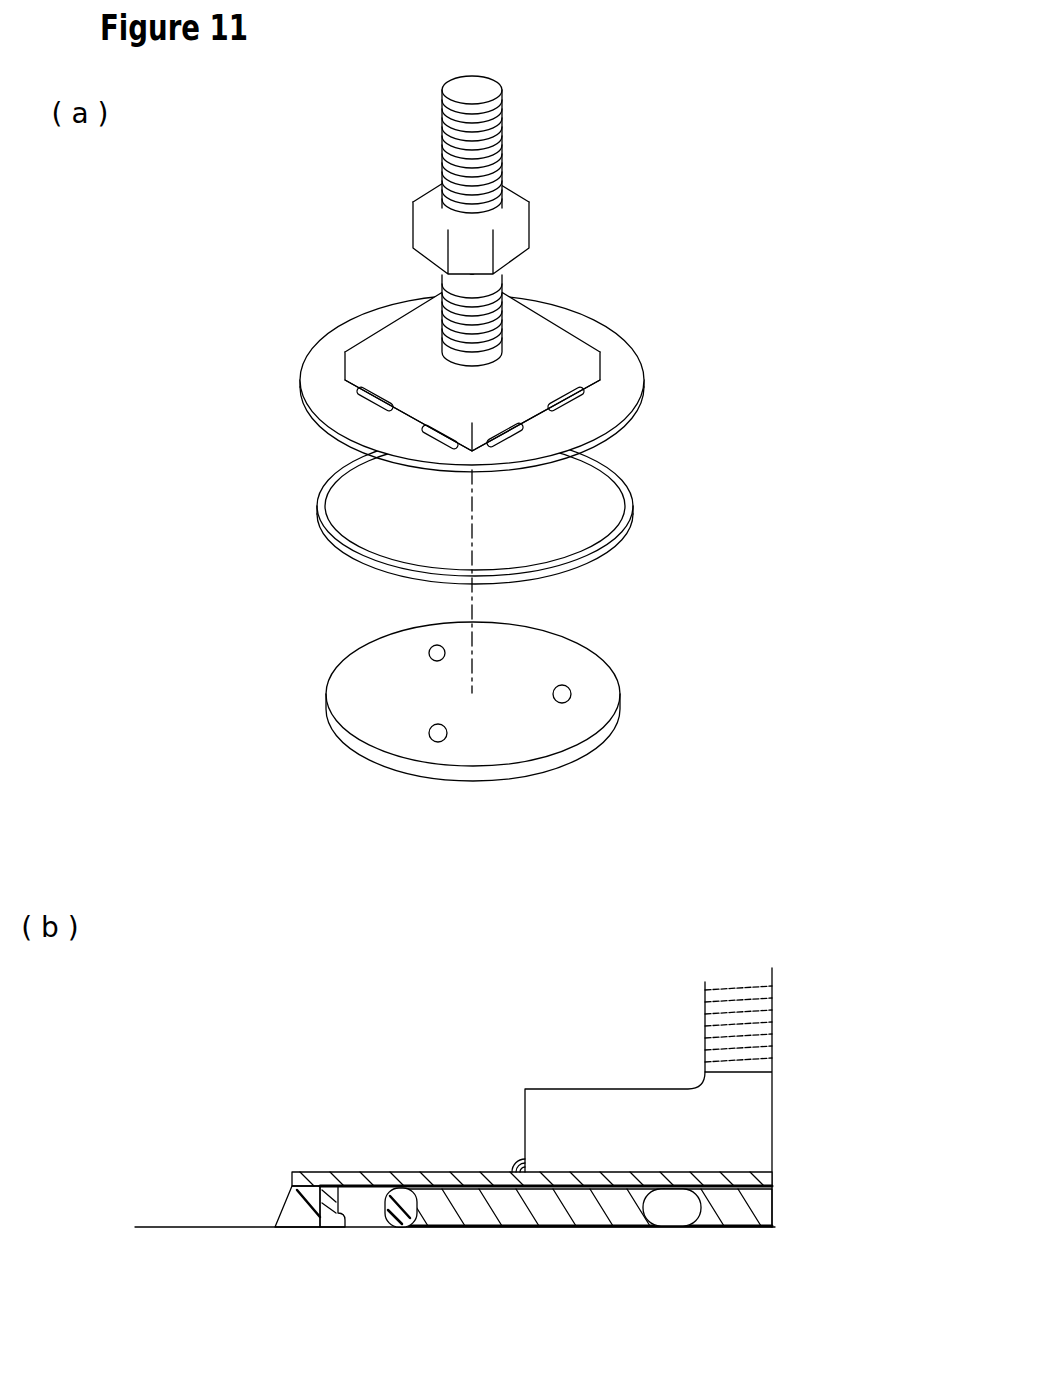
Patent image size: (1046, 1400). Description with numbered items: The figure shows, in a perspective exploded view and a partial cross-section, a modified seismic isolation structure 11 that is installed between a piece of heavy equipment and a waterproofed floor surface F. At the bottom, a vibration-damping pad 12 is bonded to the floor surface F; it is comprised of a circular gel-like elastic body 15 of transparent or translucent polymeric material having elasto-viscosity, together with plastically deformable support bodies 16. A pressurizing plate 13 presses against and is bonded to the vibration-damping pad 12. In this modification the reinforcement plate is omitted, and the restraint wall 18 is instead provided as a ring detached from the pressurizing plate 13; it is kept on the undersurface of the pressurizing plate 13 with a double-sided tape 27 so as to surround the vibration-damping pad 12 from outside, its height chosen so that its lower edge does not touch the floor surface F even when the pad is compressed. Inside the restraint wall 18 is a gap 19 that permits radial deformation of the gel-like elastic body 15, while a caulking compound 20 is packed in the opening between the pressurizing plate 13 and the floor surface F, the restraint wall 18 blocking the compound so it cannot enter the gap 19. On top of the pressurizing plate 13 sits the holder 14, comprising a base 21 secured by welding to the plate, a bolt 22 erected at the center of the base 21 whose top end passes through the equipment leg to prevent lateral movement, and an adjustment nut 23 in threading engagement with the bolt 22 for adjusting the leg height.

The seismic isolation structure 11 is at (297, 252).
The vibration-damping pad 12 is at (460, 947).
The pressurizing plate 13 is at (620, 368).
The holder 14 is at (513, 173).
The gel-like elastic body 15 is at (572, 660).
The support body 16 is at (440, 742).
The restraint wall 18 is at (320, 500).
The gap 19 is at (368, 1222).
The caulking compound 20 is at (293, 1198).
The base 21 is at (397, 335).
The bolt 22 is at (450, 136).
The adjustment nut 23 is at (527, 221).
The double-sided tape 27 is at (337, 1187).
The floor surface F is at (172, 1226).